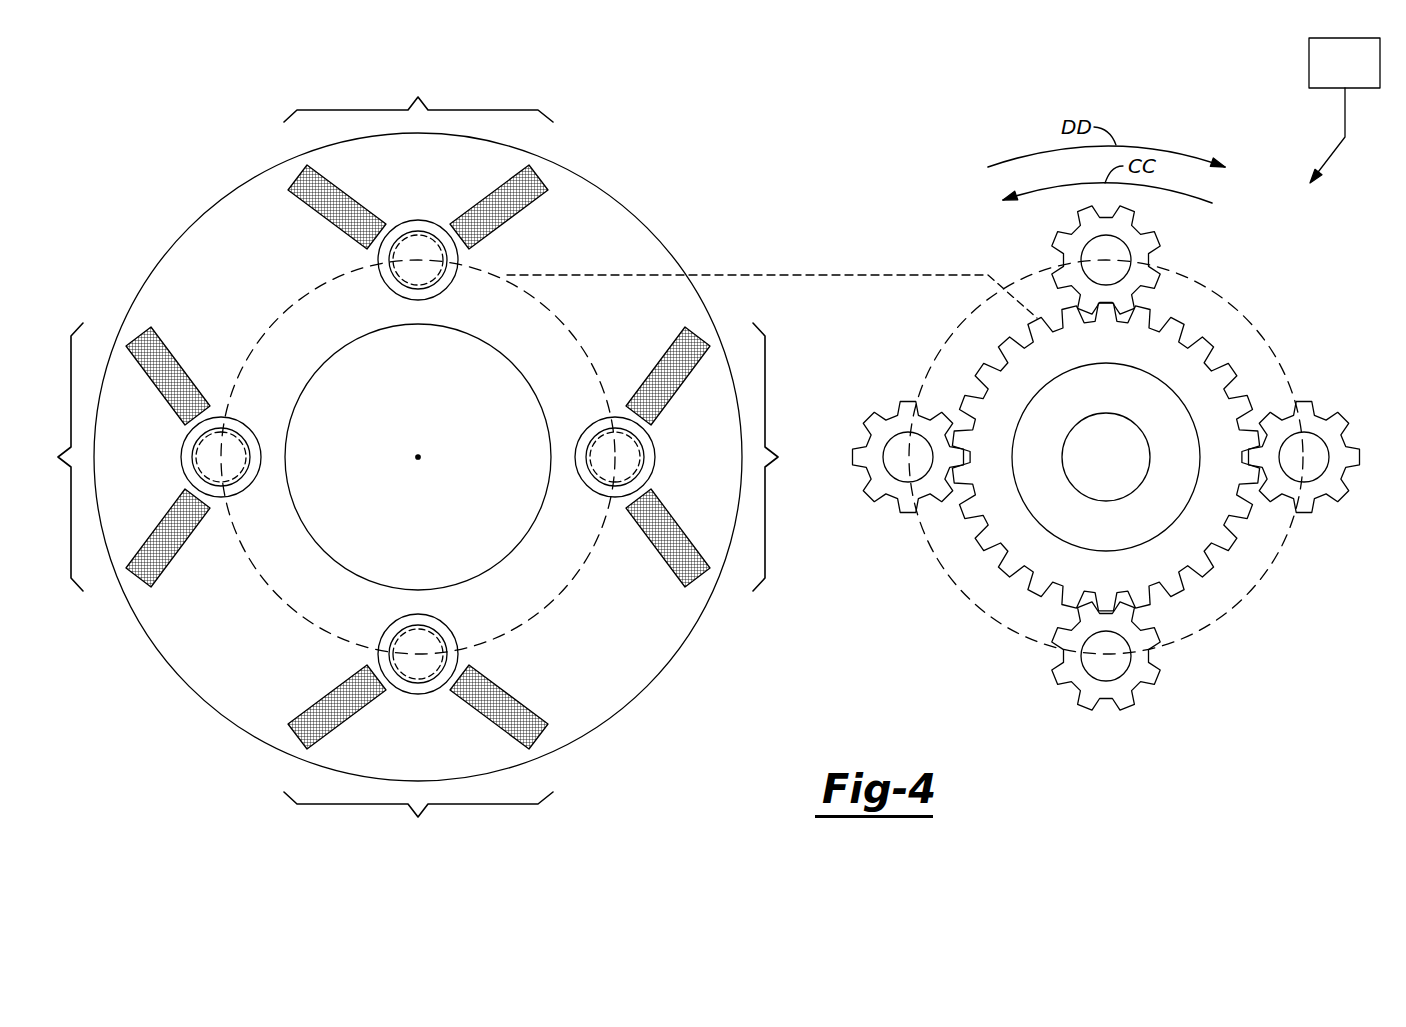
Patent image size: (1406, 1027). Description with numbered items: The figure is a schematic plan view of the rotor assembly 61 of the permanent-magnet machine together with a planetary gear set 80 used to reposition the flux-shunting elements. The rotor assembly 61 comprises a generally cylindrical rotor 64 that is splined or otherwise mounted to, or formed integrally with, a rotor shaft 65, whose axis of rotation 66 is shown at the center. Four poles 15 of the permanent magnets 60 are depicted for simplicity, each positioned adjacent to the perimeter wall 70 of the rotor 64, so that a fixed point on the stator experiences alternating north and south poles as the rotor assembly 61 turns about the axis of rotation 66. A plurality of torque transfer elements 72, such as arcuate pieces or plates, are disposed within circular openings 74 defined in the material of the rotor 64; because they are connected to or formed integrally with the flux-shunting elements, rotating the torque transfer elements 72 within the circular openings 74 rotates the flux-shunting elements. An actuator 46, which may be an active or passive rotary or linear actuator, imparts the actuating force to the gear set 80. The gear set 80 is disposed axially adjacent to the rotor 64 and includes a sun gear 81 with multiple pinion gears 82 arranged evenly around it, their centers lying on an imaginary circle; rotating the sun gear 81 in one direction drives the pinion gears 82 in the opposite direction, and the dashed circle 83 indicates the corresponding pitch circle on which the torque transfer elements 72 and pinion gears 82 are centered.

The pole 15 is at (418, 460).
The actuator 46 is at (1344, 110).
The permanent magnets 60 is at (323, 223).
The rotor assembly 61 is at (223, 178).
The rotor 64 is at (222, 274).
The rotor shaft 65 is at (498, 467).
The axis of rotation 66 is at (418, 457).
The perimeter wall 70 is at (605, 178).
The torque transfer elements 72 is at (422, 222).
The circular openings 74 is at (419, 260).
The planetary gear set 80 is at (1260, 270).
The sun gear 81 is at (1190, 384).
The pinion gears 82 is at (1150, 263).
The pitch circle 83 is at (566, 318).